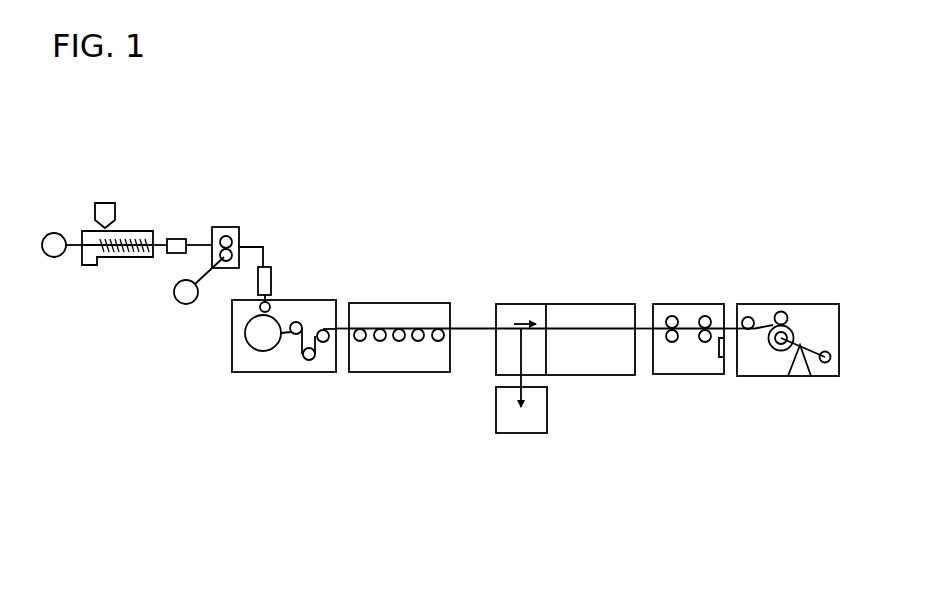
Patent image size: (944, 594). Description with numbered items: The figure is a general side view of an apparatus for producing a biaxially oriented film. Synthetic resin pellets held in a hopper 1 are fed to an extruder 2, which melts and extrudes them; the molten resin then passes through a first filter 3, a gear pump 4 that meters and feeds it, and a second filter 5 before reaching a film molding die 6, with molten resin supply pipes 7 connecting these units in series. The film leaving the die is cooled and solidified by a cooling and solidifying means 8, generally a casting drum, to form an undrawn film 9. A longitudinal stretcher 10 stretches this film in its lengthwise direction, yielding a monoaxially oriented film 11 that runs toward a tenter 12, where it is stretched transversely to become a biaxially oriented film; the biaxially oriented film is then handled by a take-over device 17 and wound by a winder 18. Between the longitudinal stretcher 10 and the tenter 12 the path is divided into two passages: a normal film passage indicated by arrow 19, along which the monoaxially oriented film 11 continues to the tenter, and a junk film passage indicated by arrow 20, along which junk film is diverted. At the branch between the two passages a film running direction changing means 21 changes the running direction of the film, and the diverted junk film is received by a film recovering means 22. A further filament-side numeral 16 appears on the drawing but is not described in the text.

The hopper 1 is at (103, 202).
The extruder 2 is at (120, 255).
The first filter 3 is at (178, 238).
The gear pump 4 is at (230, 227).
The second filter 5 is at (272, 273).
The film molding die 6 is at (270, 303).
The molten resin supply pipes 7 is at (248, 247).
The cooling and solidifying means 8 is at (270, 373).
The film (undrawn film) 9 is at (337, 331).
The longitudinal stretcher 10 is at (390, 373).
The monoaxially oriented film 11 is at (478, 328).
The tenter 12 is at (597, 375).
The treated filament 16 is at (644, 328).
The take-over device 17 is at (690, 375).
The winder 18 is at (797, 377).
The arrow (normal film passage) 19 is at (520, 320).
The arrow (junk film passage) 20 is at (516, 341).
The film running direction changing means 21 is at (529, 304).
The film recovering means 22 is at (528, 434).